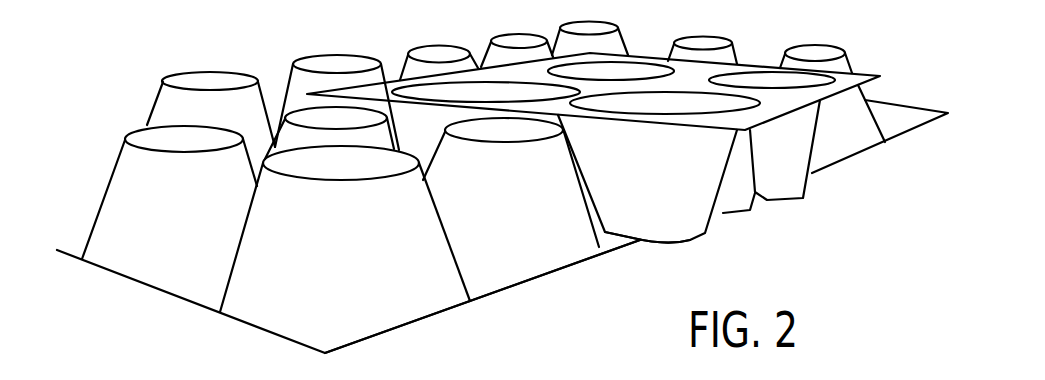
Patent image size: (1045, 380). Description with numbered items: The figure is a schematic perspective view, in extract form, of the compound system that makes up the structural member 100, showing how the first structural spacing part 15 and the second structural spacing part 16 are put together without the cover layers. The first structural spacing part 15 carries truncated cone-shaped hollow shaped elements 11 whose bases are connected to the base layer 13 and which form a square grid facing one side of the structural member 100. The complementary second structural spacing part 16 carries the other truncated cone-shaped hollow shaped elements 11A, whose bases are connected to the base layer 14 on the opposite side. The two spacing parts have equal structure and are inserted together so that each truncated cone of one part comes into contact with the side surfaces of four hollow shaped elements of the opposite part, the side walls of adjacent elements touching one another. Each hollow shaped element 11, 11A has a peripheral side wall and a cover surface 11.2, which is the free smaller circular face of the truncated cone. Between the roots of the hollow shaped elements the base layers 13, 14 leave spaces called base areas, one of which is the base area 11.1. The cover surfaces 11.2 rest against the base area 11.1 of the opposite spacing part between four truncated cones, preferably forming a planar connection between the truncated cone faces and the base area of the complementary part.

The structural member 100 is at (502, 182).
The hollow shaped element 11 is at (536, 215).
The hollow shaped element 11A is at (683, 197).
The base area 11.1 is at (613, 238).
The cover surface 11.2 is at (675, 247).
The base layer 13 is at (897, 125).
The base layer 14 is at (608, 65).
The first structural spacing part 15 is at (546, 276).
The second structural spacing part 16 is at (688, 74).